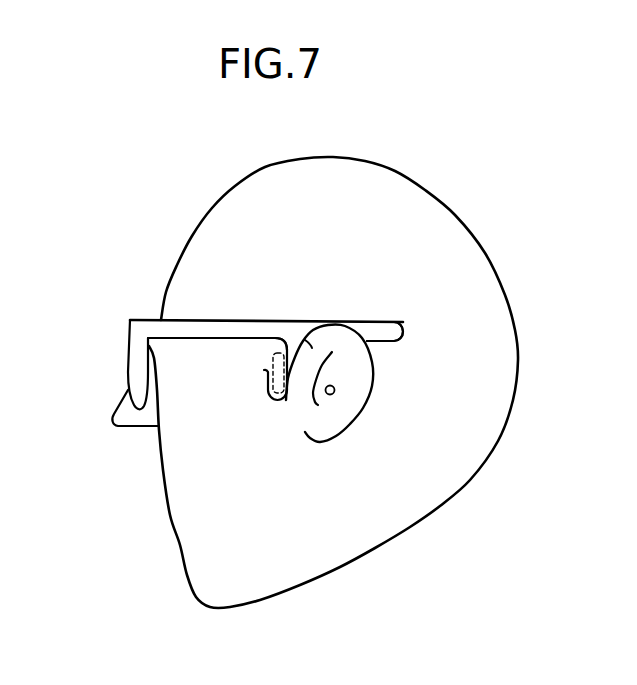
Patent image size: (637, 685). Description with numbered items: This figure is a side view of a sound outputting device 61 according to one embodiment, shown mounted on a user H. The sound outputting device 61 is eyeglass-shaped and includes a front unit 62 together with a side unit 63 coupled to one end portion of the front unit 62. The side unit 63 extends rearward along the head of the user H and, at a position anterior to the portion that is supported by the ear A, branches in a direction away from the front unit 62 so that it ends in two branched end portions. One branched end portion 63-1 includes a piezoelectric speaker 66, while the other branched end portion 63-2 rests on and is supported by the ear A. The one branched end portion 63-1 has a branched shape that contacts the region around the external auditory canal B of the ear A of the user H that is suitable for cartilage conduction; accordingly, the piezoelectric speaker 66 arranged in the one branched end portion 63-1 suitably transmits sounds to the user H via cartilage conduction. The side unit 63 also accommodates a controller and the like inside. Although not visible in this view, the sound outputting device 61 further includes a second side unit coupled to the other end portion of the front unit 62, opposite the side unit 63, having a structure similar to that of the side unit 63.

The sound outputting device 61 is at (238, 345).
The front unit 62 is at (131, 349).
The side unit 63 is at (233, 335).
The one branched end portion 63-1 is at (242, 417).
The other branched end portion 63-2 is at (382, 335).
The piezoelectric speaker 66 is at (262, 375).
The user H is at (407, 190).
The ear A is at (374, 381).
The external auditory canal B is at (335, 394).